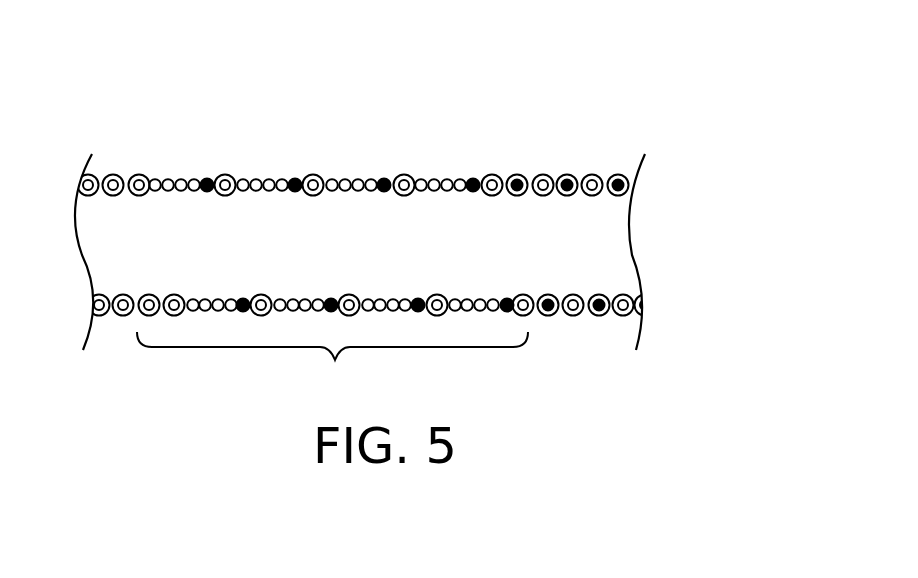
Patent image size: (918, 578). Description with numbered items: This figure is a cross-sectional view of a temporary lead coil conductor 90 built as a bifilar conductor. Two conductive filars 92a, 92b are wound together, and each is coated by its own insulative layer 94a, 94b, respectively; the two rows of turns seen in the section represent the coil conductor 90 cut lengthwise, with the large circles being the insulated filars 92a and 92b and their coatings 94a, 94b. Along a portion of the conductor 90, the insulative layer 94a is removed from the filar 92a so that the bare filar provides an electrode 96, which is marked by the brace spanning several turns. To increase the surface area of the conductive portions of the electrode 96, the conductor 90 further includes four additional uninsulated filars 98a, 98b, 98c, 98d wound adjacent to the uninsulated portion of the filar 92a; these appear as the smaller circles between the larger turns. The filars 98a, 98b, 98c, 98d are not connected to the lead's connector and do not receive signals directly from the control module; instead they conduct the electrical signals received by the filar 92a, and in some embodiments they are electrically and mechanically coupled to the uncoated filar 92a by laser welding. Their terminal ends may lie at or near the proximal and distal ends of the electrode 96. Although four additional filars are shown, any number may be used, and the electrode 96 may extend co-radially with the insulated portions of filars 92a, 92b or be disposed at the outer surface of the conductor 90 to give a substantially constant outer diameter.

The temporary lead coil conductor 90 is at (630, 80).
The filar 92a is at (397, 195).
The filar 92b is at (307, 194).
The insulative layer 94a is at (517, 207).
The insulative layer 94b is at (492, 207).
The electrode 96 is at (332, 361).
The additional uninsulated filar 98a is at (367, 179).
The additional uninsulated filar 98b is at (357, 179).
The additional uninsulated filar 98c is at (345, 192).
The additional uninsulated filar 98d is at (329, 178).